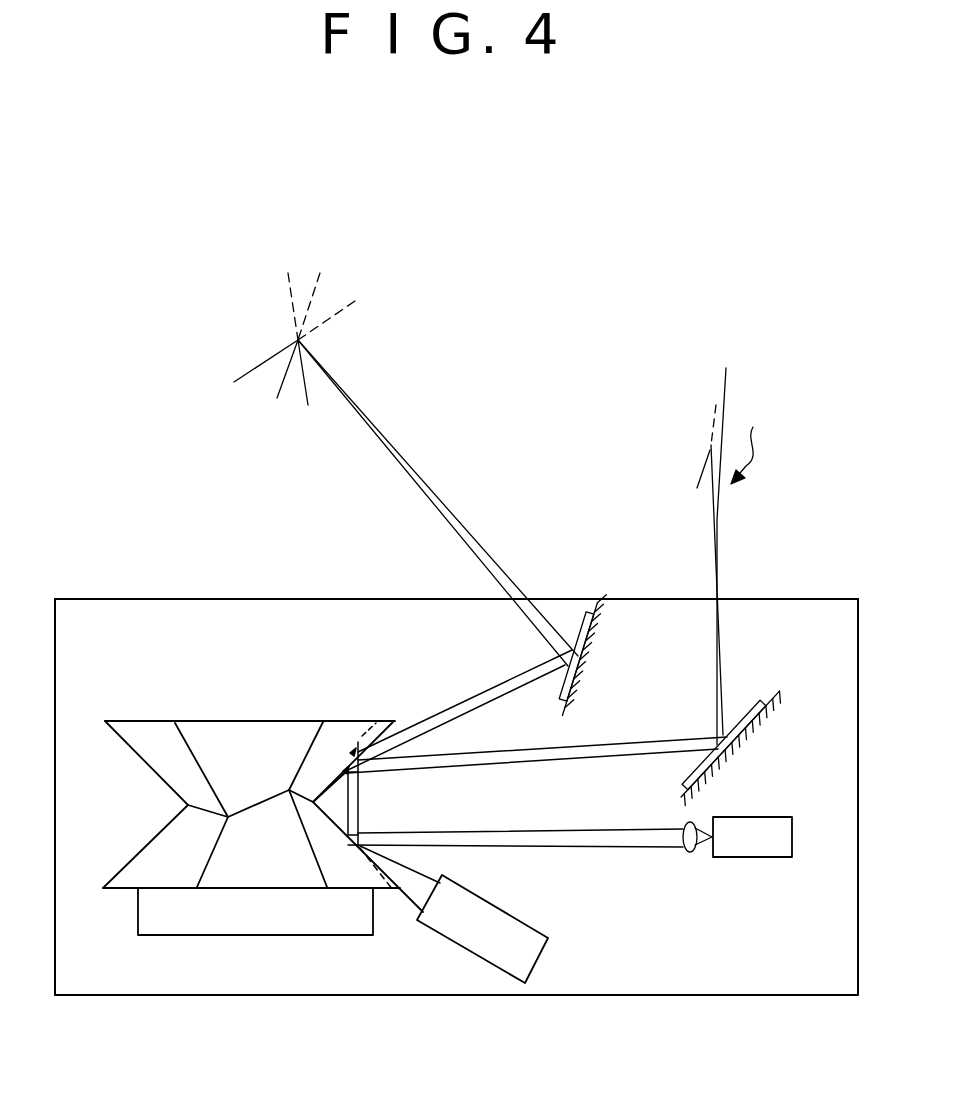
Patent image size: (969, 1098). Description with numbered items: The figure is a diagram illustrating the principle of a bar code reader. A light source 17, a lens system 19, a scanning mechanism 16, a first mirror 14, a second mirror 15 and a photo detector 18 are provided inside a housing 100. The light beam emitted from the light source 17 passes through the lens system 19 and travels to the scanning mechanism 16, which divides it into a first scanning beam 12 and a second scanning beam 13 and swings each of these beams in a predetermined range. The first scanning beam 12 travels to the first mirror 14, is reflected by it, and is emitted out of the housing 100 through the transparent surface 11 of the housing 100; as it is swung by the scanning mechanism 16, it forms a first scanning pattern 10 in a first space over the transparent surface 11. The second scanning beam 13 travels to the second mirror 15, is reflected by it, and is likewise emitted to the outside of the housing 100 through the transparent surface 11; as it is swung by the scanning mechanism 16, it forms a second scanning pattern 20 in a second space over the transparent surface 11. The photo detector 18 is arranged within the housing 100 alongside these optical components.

The first scanning pattern 10 is at (300, 336).
The transparent surface 11 is at (760, 600).
The first scanning beam 12 is at (378, 438).
The second scanning beam 13 is at (763, 440).
The first mirror 14 is at (583, 620).
The second mirror 15 is at (752, 703).
The scanning mechanism 16 is at (210, 730).
The light source 17 is at (780, 817).
The photo detector 18 is at (515, 918).
The lens system 19 is at (693, 853).
The second scanning pattern 20 is at (720, 388).
The housing 100 is at (743, 997).